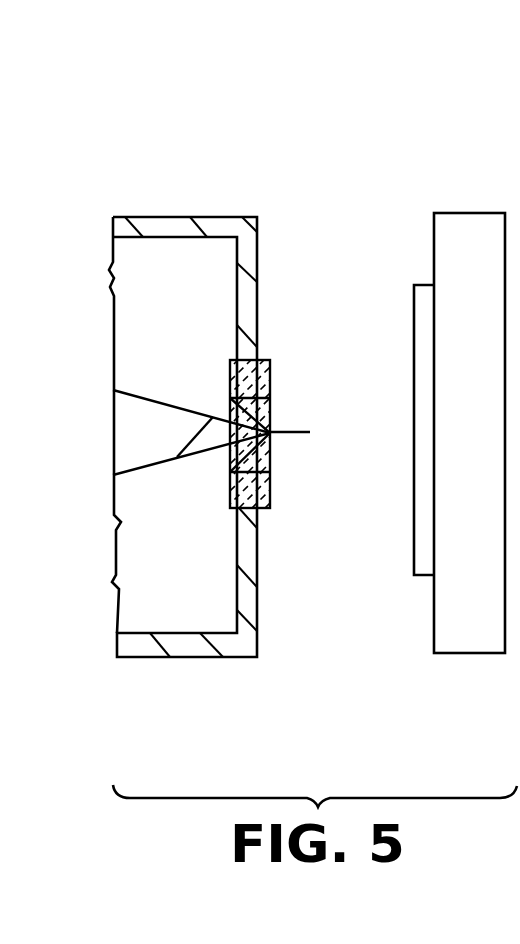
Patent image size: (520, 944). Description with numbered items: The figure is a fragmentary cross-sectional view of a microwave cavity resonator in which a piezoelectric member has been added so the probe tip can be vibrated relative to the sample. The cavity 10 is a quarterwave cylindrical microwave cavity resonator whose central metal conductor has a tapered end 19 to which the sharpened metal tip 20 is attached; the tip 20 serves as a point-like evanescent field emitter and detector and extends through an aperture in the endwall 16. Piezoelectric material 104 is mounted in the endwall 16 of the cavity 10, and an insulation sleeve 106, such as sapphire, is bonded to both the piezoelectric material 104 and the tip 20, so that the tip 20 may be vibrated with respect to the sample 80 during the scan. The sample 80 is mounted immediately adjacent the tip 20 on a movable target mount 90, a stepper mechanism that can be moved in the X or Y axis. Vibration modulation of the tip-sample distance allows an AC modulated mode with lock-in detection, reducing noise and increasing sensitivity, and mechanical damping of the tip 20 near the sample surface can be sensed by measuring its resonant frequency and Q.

The cavity 10 is at (178, 198).
The endwall 16 is at (258, 290).
The tapered end 19 is at (150, 400).
The sharpened metal tip 20 is at (298, 432).
The sample 80 is at (422, 285).
The target mount 90 is at (465, 213).
The piezoelectric material 104 is at (272, 377).
The insulation sleeve 106 is at (272, 452).